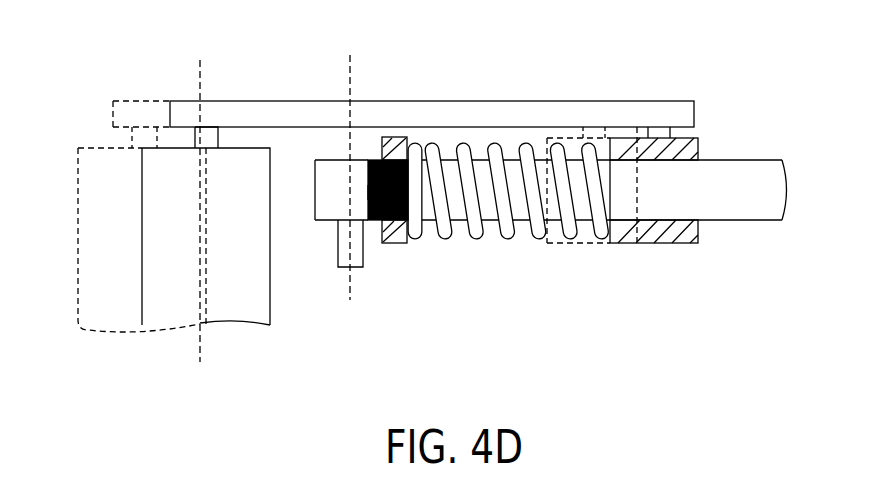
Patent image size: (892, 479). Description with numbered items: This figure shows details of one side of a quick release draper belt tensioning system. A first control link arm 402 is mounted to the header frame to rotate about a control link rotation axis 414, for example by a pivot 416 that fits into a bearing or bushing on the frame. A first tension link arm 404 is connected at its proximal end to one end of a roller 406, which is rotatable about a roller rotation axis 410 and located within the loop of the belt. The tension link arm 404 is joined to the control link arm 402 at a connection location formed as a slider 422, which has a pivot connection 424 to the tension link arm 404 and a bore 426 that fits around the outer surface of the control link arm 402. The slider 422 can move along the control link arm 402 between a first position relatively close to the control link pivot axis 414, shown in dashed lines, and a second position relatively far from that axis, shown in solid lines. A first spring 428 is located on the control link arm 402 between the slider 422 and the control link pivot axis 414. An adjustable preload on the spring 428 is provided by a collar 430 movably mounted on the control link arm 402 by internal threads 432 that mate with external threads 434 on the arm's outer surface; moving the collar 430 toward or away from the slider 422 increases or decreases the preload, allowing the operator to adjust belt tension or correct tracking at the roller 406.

The first control link arm 402 is at (750, 205).
The first tension link arm 404 is at (448, 112).
The roller 406 is at (148, 300).
The roller rotation axis 410 is at (197, 73).
The control link rotation axis 414 is at (348, 73).
The pivot 416 is at (345, 250).
The slider 422 is at (690, 148).
The pivot connection 424 is at (660, 130).
The bore 426 is at (680, 160).
The first spring 428 is at (477, 228).
The collar 430 is at (395, 243).
The internal threads 432 is at (372, 192).
The external threads 434 is at (375, 158).